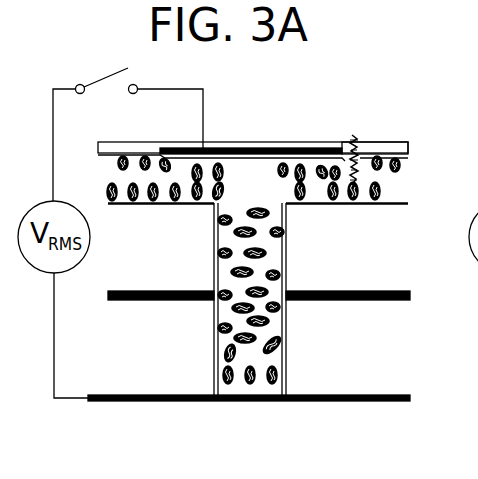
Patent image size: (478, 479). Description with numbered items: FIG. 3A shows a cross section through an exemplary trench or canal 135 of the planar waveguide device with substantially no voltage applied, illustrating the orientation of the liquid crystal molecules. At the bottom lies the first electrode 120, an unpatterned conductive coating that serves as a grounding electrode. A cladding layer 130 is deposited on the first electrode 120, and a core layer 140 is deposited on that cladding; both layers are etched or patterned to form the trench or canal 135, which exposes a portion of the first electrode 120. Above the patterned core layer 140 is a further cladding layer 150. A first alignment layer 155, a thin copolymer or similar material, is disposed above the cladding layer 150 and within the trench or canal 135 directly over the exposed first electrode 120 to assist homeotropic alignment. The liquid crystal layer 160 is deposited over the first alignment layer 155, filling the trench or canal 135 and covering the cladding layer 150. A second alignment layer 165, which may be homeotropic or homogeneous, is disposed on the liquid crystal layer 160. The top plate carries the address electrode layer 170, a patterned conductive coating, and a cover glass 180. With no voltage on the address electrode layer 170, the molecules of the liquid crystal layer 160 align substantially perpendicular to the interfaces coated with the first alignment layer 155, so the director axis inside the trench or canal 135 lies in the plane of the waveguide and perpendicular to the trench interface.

The first electrode 120 is at (100, 402).
The cladding layer 130 is at (183, 363).
The trench or canal 135 is at (243, 388).
The core layer 140 is at (150, 302).
The cladding layer 150 is at (368, 260).
The first alignment layer 155 is at (392, 205).
The liquid crystal layer 160 is at (385, 163).
The second alignment layer 165 is at (407, 157).
The address electrode layer 170 is at (318, 147).
The cover glass 180 is at (350, 140).